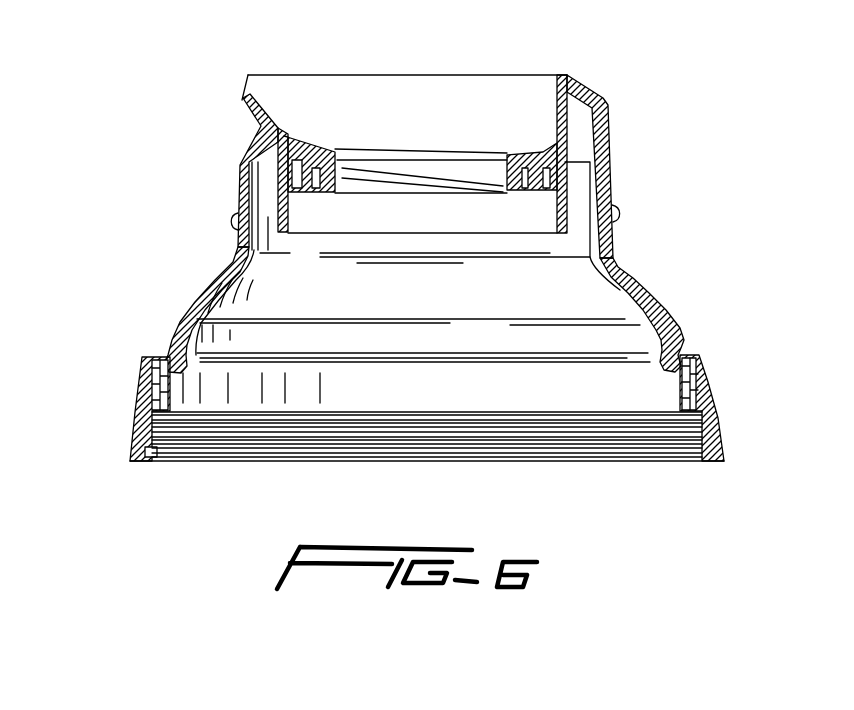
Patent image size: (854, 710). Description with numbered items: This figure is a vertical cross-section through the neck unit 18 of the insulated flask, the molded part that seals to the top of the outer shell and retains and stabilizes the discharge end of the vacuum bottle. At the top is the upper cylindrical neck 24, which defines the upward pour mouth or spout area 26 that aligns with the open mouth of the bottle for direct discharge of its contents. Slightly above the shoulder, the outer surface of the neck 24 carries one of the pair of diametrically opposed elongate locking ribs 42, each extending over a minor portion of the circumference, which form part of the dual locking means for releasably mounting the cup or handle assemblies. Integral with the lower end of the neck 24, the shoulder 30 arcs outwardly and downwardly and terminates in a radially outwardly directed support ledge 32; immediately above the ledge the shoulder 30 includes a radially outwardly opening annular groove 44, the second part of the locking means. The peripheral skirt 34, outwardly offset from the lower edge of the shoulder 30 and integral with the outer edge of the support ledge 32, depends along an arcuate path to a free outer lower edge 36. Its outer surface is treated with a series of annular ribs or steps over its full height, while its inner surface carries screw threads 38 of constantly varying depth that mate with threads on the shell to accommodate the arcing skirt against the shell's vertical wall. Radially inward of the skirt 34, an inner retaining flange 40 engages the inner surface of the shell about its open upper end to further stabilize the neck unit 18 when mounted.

The neck unit 18 is at (679, 245).
The cylindrical neck 24 is at (608, 170).
The spout area 26 is at (380, 97).
The shoulder 30 is at (660, 296).
The support ledge 32 is at (687, 353).
The peripheral skirt 34 is at (138, 408).
The free outer lower edge 36 is at (137, 462).
The screw threads 38 is at (163, 455).
The inner retaining flange 40 is at (212, 402).
The locking ribs 42 is at (614, 213).
The annular groove 44 is at (163, 352).